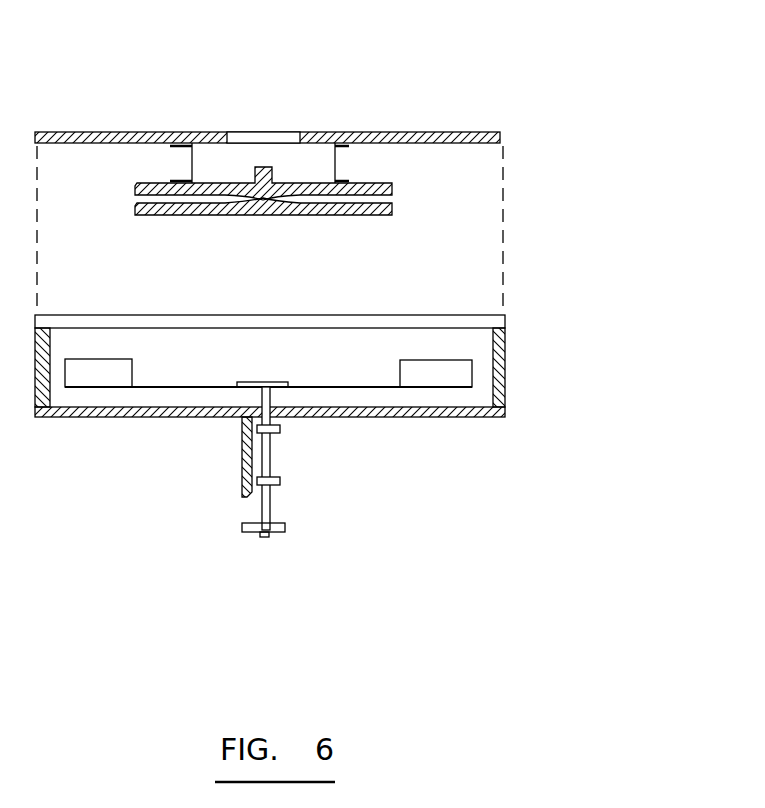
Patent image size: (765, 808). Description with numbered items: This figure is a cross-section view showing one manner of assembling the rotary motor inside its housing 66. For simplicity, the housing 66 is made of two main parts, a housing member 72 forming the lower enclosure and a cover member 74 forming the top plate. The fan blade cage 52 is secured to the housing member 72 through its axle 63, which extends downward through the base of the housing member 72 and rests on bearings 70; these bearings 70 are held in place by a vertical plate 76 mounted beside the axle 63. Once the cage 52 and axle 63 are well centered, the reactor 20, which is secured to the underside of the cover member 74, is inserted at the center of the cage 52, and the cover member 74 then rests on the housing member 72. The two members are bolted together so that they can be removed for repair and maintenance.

The cover member 74 is at (427, 132).
The reactor 20 is at (410, 211).
The housing member 72 is at (507, 370).
The housing 66 is at (440, 418).
The fan blade cage 52 is at (355, 378).
The vertical plate 76 is at (242, 449).
The axle 63 is at (272, 457).
The bearings 70 is at (282, 431).